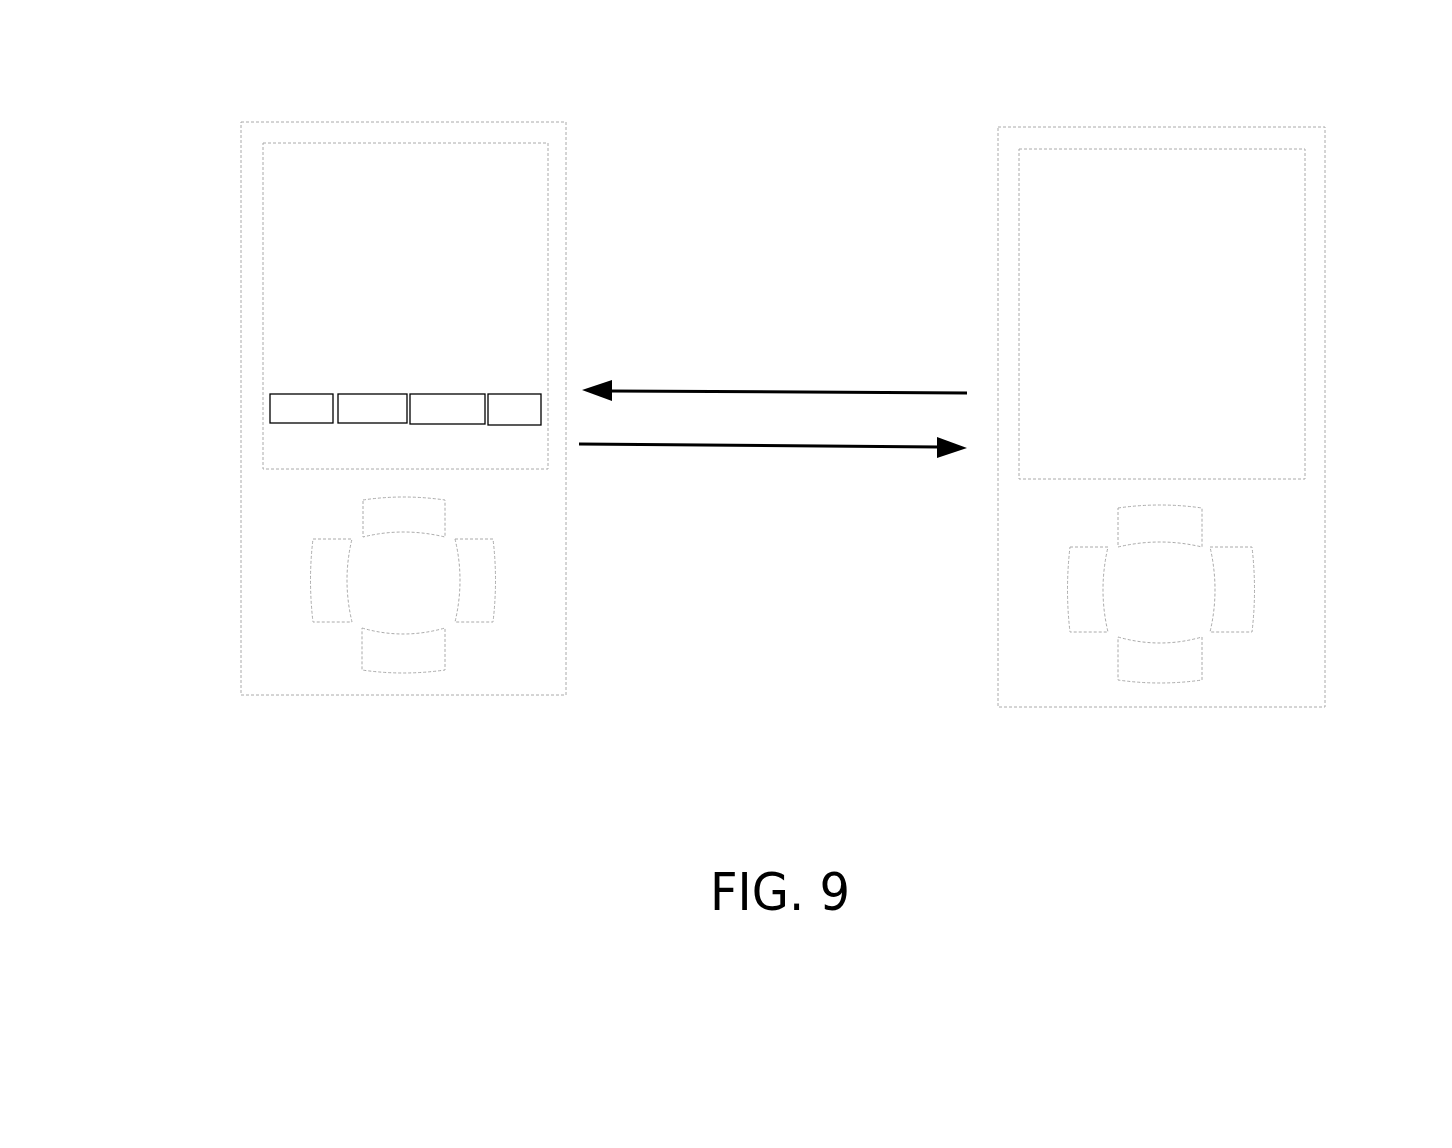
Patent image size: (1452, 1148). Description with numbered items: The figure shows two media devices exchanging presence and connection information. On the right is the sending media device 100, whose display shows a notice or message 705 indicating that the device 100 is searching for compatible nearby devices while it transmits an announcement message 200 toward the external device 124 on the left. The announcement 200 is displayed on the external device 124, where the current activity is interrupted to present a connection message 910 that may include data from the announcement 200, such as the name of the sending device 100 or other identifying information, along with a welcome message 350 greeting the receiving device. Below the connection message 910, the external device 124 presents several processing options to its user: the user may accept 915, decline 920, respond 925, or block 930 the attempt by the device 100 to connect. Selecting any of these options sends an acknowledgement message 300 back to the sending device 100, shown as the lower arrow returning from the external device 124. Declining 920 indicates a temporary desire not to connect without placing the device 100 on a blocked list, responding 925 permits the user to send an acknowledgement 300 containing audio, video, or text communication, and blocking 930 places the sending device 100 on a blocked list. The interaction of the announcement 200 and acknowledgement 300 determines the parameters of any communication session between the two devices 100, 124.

The external device 124 is at (240, 193).
The connection message 910 is at (542, 253).
The greeting message (Hello, Device B!) 350 is at (500, 337).
The accept option 915 is at (288, 430).
The decline option 920 is at (366, 432).
The respond option 925 is at (440, 434).
The block option 930 is at (501, 435).
The announcement message 200 is at (774, 381).
The acknowledgement message 300 is at (773, 436).
The media device 100 is at (1330, 197).
The notice or message 705 is at (1037, 325).